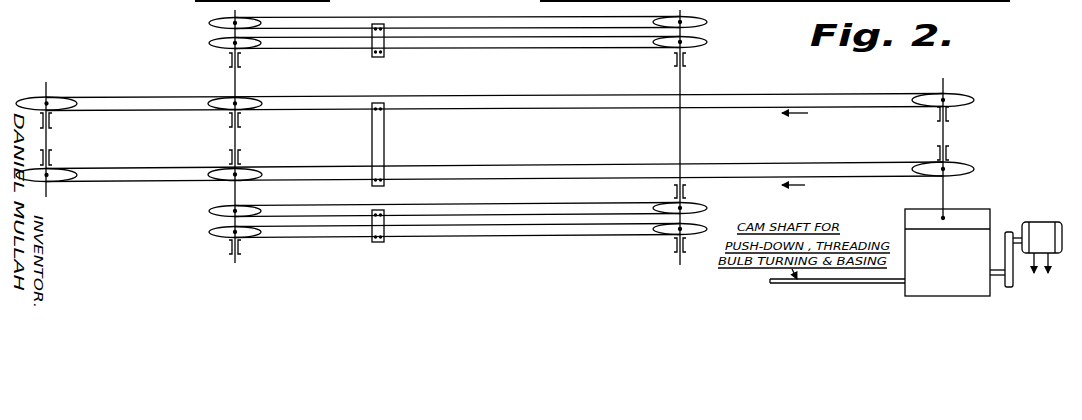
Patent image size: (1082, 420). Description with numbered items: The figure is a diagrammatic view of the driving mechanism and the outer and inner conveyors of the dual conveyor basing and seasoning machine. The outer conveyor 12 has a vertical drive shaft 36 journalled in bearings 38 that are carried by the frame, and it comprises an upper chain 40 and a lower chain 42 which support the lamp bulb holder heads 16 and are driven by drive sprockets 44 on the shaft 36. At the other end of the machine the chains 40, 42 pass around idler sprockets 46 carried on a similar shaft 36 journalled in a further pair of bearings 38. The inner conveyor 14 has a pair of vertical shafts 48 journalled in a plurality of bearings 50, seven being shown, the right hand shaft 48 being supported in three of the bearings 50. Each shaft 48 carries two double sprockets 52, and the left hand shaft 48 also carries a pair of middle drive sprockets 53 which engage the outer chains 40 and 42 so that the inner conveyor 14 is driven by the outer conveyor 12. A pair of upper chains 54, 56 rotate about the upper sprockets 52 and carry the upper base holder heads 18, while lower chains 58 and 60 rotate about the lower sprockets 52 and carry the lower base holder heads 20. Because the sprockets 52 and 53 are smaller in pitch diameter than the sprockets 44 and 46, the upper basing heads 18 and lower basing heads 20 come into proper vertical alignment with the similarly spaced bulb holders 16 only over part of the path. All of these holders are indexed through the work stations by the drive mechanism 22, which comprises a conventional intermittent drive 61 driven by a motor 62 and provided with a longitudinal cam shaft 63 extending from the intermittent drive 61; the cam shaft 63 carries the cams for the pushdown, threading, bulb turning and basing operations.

The outer conveyor 12 is at (494, 124).
The inner conveyor 14 is at (457, 145).
The lamp bulb holder heads 16 is at (386, 150).
The upper base holder heads 18 is at (386, 56).
The lower base holder heads 20 is at (386, 241).
The drive mechanism 22 is at (992, 210).
The vertical drive shaft 36 is at (44, 94).
The bearings 38 is at (51, 120).
The upper chain 40 is at (830, 93).
The lower chain 42 is at (785, 150).
The drive sprockets 44 is at (924, 93).
The idler sprockets 46 is at (72, 98).
The vertical shafts 48 is at (238, 135).
The bearings 50 is at (228, 60).
The double sprockets 52 is at (210, 43).
The middle drive sprockets 53 is at (261, 98).
The upper chain 54 is at (499, 17).
The upper chain 56 is at (482, 50).
The lower chain 58 is at (505, 203).
The lower chain 60 is at (531, 238).
The intermittent drive 61 is at (903, 232).
The motor 62 is at (1043, 228).
The cam shaft 63 is at (770, 281).